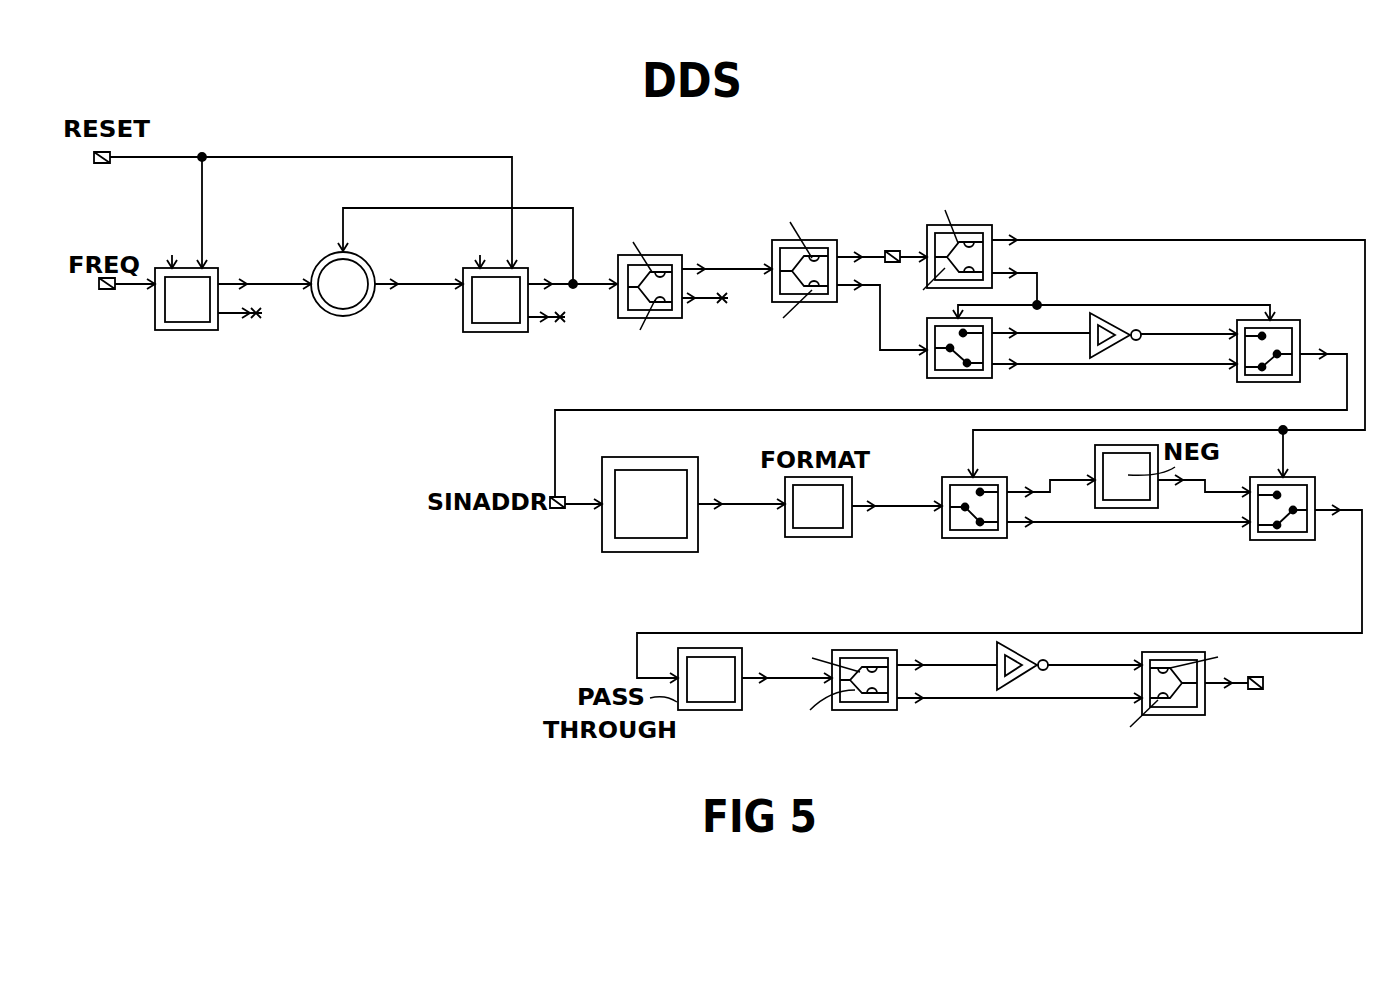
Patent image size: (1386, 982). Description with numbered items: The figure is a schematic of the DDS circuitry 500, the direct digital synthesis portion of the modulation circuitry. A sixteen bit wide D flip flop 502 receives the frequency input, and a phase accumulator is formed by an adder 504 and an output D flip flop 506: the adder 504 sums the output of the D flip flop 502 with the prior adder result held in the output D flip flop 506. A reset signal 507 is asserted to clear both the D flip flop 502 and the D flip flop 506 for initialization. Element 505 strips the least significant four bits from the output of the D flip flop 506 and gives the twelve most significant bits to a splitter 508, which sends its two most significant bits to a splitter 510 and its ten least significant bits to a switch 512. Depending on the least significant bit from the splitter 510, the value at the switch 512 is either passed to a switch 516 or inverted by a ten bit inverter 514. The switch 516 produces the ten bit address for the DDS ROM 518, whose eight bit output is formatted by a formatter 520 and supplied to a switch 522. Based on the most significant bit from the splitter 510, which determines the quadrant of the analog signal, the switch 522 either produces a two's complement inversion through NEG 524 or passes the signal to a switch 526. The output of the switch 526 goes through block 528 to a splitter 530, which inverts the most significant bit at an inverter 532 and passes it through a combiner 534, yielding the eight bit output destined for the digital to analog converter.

The DDS circuitry 500 is at (962, 105).
The D flip flop 502 is at (187, 333).
The adder 504 is at (355, 318).
The element 505 is at (655, 323).
The output D flip flop 506 is at (510, 335).
The reset signal 507 is at (268, 155).
The splitter 508 is at (832, 237).
The splitter 510 is at (968, 225).
The switch 512 is at (920, 368).
The 10 bit inverter 514 is at (1110, 318).
The switch 516 is at (1293, 320).
The DDS ROM 518 is at (645, 555).
The formatter 520 is at (810, 540).
The switch 522 is at (967, 540).
The NEG 524 is at (1135, 510).
The switch 526 is at (1310, 477).
The block 528 is at (708, 712).
The splitter 530 is at (858, 712).
The inverter 532 is at (1013, 690).
The combiner 534 is at (1175, 717).